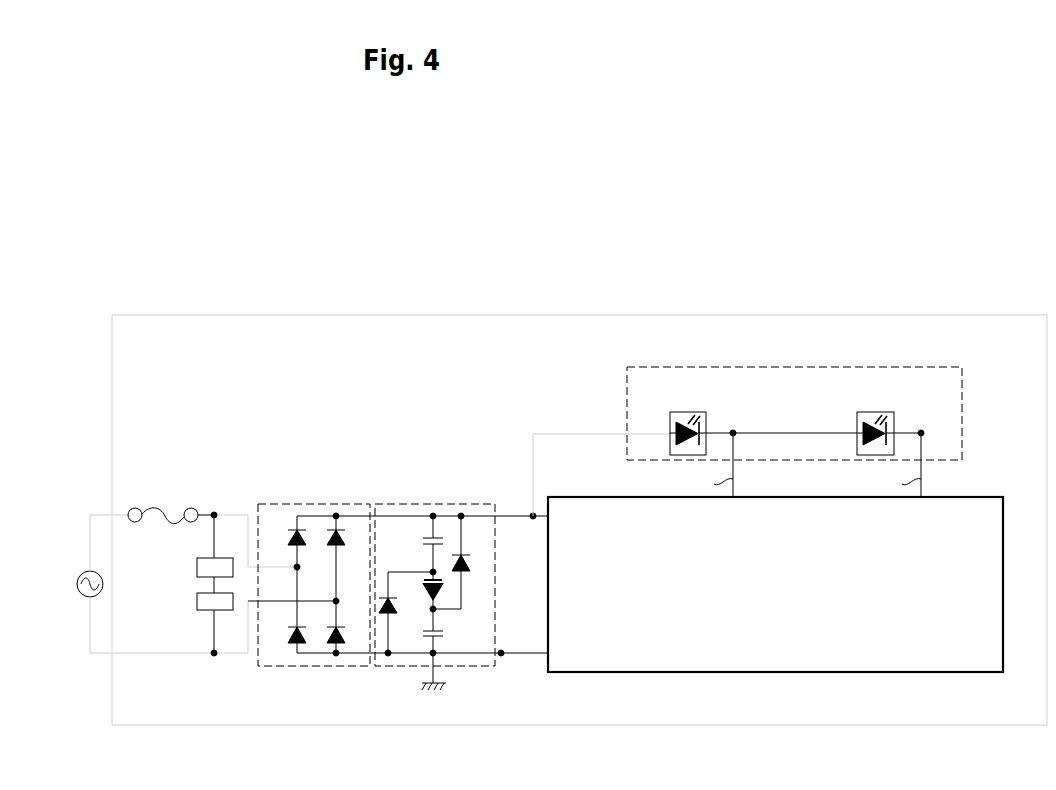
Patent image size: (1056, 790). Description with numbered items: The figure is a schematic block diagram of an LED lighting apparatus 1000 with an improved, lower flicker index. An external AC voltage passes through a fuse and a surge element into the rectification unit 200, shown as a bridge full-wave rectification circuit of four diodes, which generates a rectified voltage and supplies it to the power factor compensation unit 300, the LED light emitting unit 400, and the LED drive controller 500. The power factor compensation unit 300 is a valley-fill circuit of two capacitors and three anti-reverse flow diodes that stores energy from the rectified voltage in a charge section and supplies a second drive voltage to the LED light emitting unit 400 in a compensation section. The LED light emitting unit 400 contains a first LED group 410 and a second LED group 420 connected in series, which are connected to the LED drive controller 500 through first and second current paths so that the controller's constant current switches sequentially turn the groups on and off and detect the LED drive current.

The LED lighting apparatus 1000 is at (597, 315).
The rectification unit 200 is at (313, 504).
The power factor compensation unit 300 is at (435, 504).
The LED light emitting unit 400 is at (880, 367).
The first LED group 410 is at (707, 420).
The second LED group 420 is at (895, 420).
The LED drive controller 500 is at (800, 672).